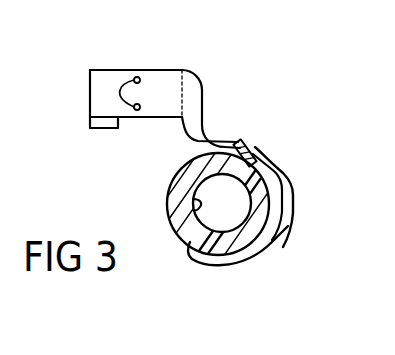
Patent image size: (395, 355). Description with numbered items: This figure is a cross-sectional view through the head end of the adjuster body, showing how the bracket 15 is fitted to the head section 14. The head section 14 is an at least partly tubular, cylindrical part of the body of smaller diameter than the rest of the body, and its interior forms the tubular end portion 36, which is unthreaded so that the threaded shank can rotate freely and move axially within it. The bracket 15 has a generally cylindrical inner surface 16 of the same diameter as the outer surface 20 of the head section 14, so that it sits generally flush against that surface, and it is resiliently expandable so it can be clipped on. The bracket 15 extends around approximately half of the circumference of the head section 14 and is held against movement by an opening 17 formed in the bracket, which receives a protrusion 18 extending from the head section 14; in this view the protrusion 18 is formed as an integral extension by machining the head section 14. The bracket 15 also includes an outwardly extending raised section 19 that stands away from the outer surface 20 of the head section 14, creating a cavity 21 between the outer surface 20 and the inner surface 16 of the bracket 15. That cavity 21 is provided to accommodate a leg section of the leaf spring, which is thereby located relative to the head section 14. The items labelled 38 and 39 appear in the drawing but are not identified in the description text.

The head section 14 is at (192, 174).
The bracket 15 is at (237, 256).
The inner surface 16 is at (190, 242).
The opening 17 is at (253, 150).
The protrusion 18 is at (247, 146).
The raised section 19 is at (290, 199).
The outer surface 20 is at (286, 240).
The cavity 21 is at (280, 216).
The tubular end portion 36 is at (197, 211).
The cable 38 is at (117, 88).
The holder 39 is at (118, 122).